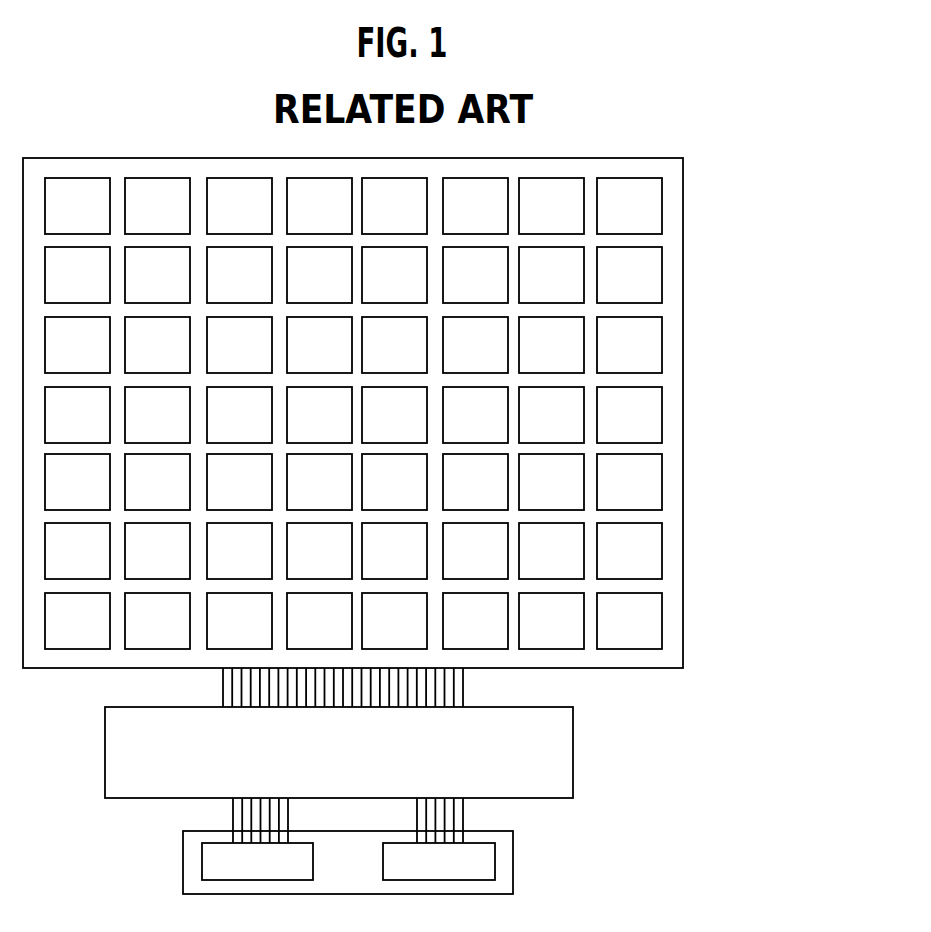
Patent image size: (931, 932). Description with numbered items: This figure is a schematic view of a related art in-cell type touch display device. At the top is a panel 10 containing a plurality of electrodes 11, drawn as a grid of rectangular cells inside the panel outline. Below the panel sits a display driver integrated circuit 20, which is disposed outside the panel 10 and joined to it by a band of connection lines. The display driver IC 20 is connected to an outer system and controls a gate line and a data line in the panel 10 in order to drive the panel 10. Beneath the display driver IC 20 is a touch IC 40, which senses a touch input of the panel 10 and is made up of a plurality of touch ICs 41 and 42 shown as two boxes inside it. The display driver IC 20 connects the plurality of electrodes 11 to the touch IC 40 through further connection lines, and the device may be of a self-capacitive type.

The panel 10 is at (683, 258).
The electrodes 11 is at (662, 345).
The display driver integrated circuit 20 is at (573, 728).
The touch IC 40 is at (513, 839).
The touch IC 41 is at (202, 860).
The touch IC 42 is at (495, 869).